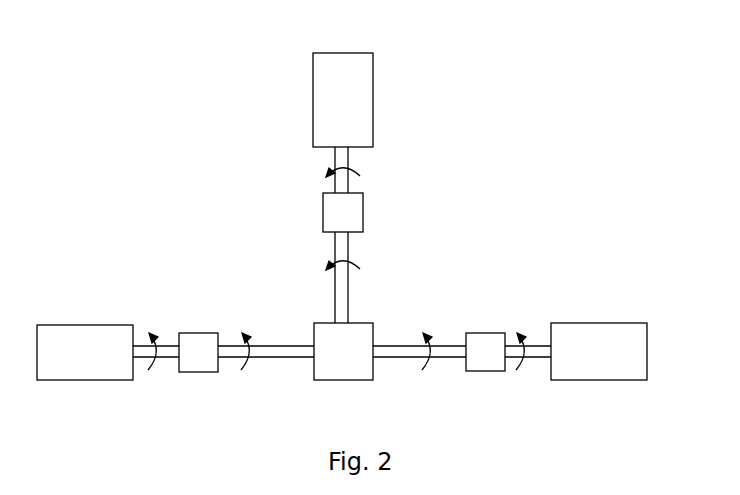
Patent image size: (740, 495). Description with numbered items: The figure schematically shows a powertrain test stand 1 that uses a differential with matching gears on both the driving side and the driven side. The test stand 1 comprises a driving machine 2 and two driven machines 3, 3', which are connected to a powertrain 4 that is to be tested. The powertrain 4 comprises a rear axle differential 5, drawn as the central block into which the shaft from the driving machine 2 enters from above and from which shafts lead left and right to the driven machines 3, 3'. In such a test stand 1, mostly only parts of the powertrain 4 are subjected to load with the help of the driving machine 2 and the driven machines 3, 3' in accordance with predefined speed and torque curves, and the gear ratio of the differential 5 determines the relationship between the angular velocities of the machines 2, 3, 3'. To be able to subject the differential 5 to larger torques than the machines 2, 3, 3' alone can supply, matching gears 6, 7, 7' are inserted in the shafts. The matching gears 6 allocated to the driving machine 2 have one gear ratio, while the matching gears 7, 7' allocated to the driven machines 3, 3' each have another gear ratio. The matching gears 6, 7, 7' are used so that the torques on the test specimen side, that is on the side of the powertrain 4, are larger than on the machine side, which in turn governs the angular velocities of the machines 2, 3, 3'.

The powertrain test stand 1 is at (549, 108).
The driving machine 2 is at (349, 105).
The driven machine 3 is at (85, 352).
The driven machine 3' is at (599, 351).
The powertrain 4 is at (281, 290).
The rear axle differential 5 is at (343, 351).
The matching gears 6 is at (348, 212).
The matching gears 7 is at (202, 371).
The matching gears 7' is at (486, 371).